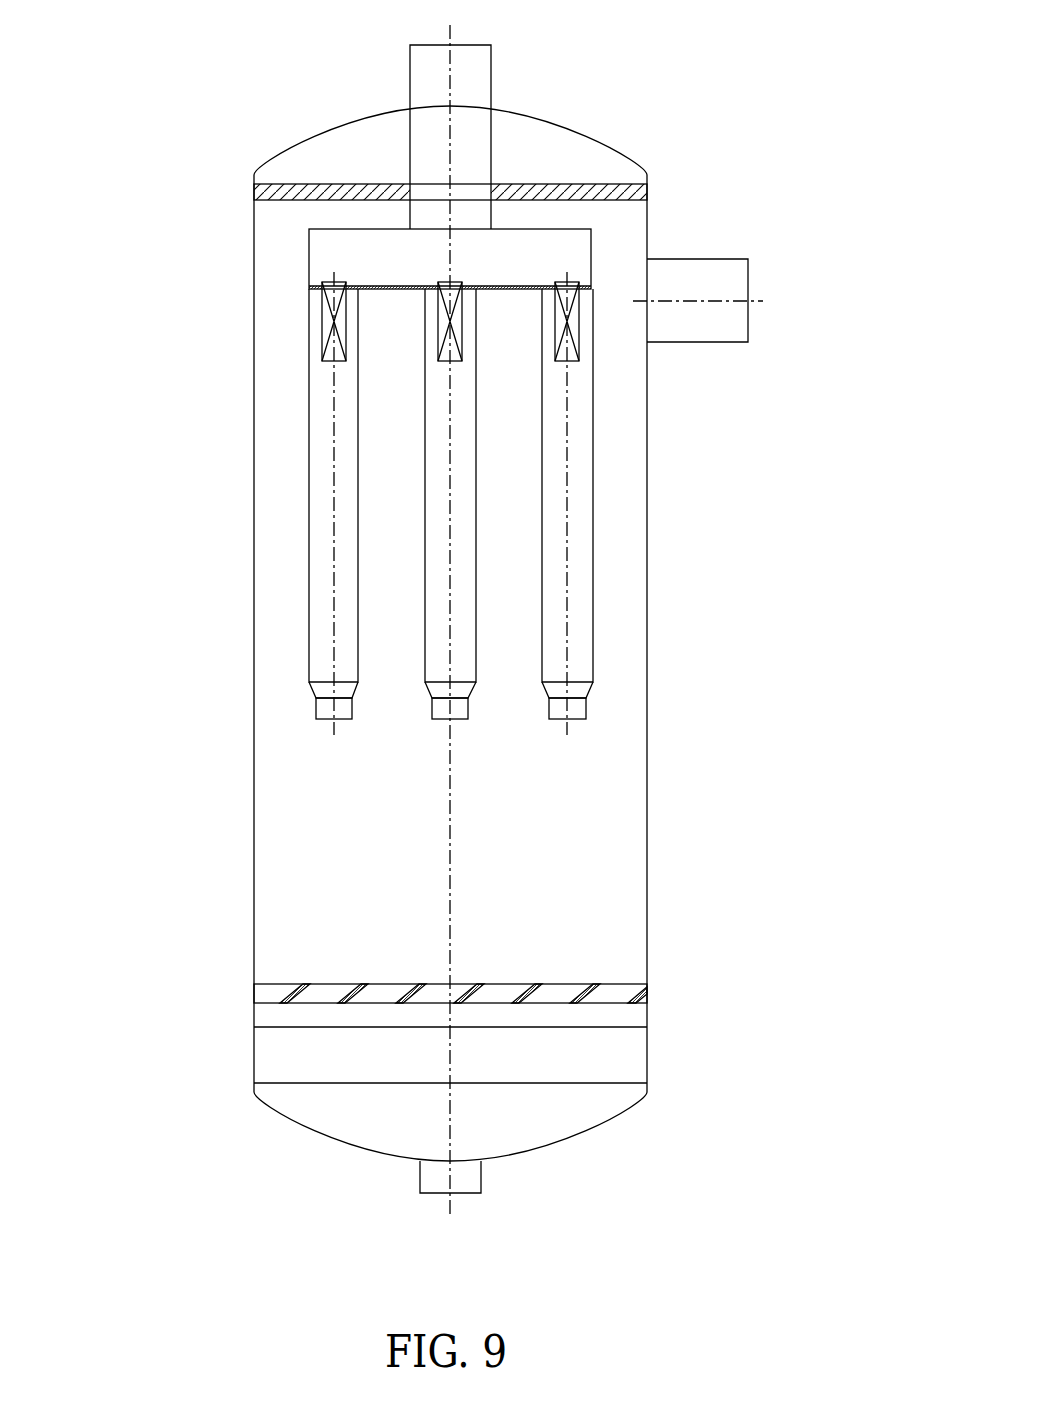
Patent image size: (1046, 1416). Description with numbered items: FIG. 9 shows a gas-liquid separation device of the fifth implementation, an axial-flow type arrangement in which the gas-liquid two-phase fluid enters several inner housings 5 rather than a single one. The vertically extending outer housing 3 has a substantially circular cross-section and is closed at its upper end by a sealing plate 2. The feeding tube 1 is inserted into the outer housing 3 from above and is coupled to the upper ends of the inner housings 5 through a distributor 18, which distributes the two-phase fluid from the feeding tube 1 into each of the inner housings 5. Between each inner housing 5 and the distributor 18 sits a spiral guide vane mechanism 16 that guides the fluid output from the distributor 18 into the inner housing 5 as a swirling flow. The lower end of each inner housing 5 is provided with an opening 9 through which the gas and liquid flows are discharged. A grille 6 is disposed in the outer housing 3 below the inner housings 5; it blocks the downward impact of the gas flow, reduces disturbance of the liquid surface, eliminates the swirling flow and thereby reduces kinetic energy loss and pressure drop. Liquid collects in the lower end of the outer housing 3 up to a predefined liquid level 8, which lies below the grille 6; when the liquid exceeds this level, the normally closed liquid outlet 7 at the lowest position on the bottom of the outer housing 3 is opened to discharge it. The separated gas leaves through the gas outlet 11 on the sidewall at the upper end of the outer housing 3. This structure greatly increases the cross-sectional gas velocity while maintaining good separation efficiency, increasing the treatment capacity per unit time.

The feeding tube 1 is at (410, 77).
The sealing plate 2 is at (318, 184).
The outer housing 3 is at (254, 268).
The inner housing 5 is at (309, 427).
The grille 6 is at (332, 985).
The liquid outlet 7 is at (470, 1182).
The predefined liquid level 8 is at (608, 1062).
The opening 9 is at (586, 698).
The gas outlet 11 is at (678, 322).
The spiral guide vane mechanism 16 is at (578, 332).
The distributor 18 is at (563, 260).